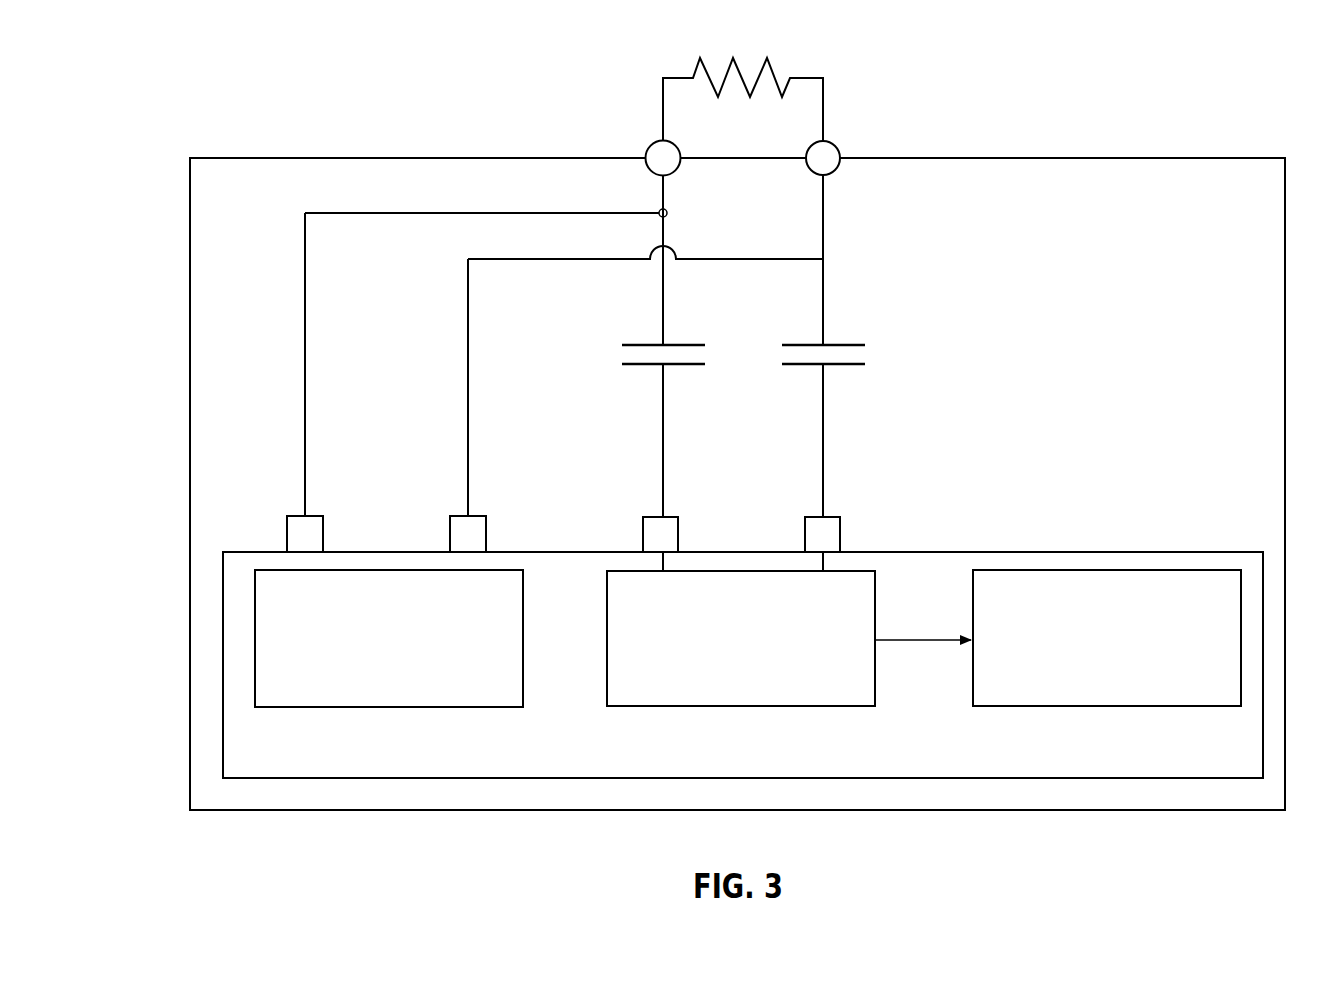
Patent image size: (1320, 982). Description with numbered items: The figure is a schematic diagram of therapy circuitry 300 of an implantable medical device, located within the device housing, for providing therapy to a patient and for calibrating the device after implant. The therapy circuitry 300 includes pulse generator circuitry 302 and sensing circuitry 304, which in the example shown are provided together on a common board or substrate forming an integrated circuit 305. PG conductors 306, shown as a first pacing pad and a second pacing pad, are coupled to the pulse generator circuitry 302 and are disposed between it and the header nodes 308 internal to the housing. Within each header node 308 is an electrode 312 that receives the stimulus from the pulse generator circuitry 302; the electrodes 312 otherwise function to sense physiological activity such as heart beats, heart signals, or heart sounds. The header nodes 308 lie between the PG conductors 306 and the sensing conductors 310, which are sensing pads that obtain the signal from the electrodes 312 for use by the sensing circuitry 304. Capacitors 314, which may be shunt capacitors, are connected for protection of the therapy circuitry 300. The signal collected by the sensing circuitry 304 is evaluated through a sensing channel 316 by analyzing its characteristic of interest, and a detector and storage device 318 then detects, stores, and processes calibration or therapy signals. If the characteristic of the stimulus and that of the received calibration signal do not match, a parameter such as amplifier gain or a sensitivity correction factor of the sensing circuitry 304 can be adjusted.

The therapy circuitry 300 is at (1187, 67).
The pulse generator circuitry 302 is at (215, 545).
The sensing circuitry 304 is at (972, 530).
The integrated circuit 305 is at (1168, 552).
The PG conductors 306 is at (450, 535).
The header nodes 308 is at (582, 290).
The sensing conductors 310 is at (805, 535).
The electrodes 312 is at (813, 142).
The capacitors 314 is at (798, 343).
The sensing channel 316 is at (802, 706).
The detector and storage device 318 is at (1014, 706).